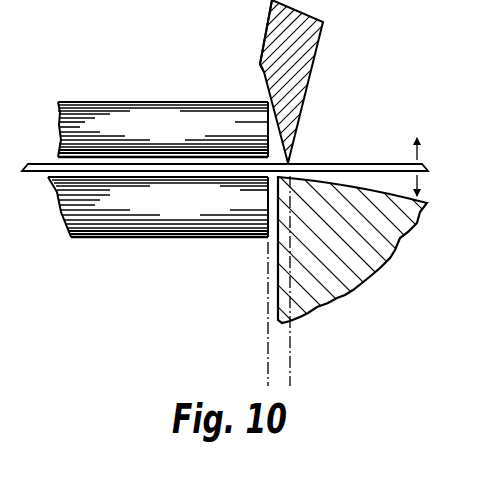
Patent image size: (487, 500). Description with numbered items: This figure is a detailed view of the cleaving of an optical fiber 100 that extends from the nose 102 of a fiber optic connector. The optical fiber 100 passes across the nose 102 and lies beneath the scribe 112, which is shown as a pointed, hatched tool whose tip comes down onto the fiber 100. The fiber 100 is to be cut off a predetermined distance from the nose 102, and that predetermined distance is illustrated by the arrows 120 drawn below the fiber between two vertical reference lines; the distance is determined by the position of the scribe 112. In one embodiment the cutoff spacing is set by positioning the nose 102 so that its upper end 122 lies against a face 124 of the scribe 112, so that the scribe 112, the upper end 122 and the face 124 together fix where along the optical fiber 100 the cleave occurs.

The optical fiber 100 is at (348, 162).
The nose 102 is at (177, 140).
The scribe 112 is at (300, 119).
The arrows 120 is at (267, 372).
The upper end 122 is at (266, 133).
The face 124 is at (261, 74).